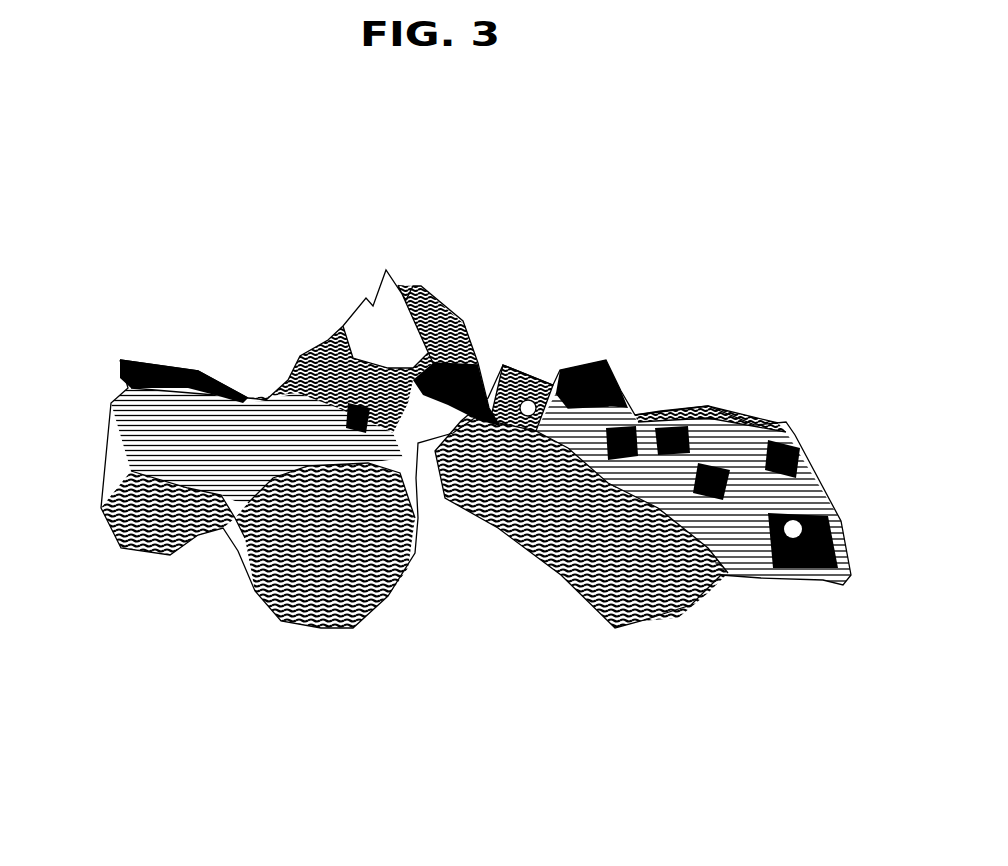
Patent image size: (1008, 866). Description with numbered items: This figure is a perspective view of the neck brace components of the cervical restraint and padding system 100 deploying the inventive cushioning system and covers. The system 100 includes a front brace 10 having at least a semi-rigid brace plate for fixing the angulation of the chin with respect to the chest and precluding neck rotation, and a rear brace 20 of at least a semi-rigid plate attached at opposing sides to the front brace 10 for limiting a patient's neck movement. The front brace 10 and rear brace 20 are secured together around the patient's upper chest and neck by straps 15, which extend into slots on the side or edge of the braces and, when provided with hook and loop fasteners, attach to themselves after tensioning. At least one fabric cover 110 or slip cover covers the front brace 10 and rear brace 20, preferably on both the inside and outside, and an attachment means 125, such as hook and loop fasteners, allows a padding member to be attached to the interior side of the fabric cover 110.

The cervical restraint and padding system 100 is at (230, 222).
The front brace 10 is at (675, 405).
The rear brace 20 is at (285, 340).
The strap 15 is at (553, 360).
The fabric cover 110 is at (163, 525).
The attachment means 125 is at (114, 352).